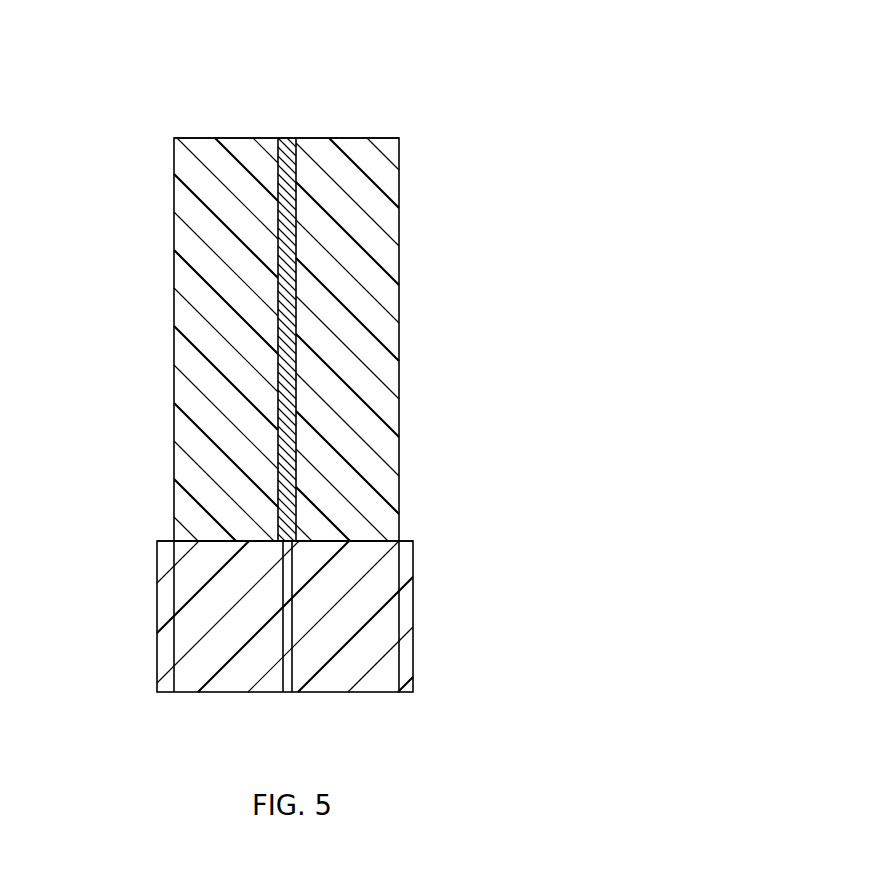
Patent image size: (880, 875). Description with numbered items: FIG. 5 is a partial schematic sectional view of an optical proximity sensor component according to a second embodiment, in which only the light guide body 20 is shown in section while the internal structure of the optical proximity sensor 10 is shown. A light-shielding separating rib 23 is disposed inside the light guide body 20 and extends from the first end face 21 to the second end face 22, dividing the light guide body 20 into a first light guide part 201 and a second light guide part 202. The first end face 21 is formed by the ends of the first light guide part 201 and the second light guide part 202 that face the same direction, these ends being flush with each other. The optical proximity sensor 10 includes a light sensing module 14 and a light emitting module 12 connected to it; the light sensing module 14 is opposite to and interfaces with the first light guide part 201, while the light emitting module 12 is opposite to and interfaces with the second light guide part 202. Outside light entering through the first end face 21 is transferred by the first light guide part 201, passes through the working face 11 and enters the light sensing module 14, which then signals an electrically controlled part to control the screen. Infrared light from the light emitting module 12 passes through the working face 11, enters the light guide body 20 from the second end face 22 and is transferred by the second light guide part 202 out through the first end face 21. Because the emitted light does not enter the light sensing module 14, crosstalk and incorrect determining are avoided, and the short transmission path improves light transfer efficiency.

The optical proximity sensor 10 is at (295, 603).
The working face 11 is at (165, 538).
The light emitting module 12 is at (225, 647).
The light sensing module 14 is at (368, 652).
The light guide body 20 is at (310, 290).
The first end face 21 is at (327, 138).
The second end face 22 is at (357, 549).
The light-shielding separating rib 23 is at (278, 138).
The first light guide part 201 is at (340, 372).
The second light guide part 202 is at (252, 295).